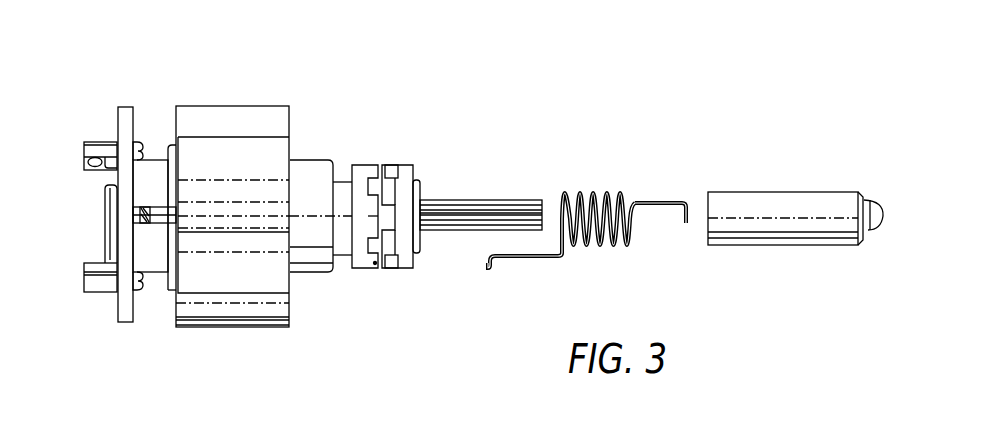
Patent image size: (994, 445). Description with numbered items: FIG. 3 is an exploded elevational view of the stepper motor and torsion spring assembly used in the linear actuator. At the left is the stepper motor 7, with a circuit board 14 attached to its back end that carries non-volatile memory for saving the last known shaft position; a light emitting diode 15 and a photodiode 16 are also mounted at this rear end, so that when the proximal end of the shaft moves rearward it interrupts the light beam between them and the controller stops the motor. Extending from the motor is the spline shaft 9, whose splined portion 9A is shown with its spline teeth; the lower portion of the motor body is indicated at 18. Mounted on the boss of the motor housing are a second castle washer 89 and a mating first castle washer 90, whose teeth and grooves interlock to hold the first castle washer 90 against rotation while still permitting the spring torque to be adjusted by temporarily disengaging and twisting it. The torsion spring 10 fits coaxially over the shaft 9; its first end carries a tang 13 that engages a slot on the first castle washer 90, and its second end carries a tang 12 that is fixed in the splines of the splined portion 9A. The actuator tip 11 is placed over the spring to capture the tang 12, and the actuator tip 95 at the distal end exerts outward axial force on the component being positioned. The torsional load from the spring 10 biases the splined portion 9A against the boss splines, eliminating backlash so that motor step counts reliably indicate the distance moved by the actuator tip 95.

The stepper motor 7 is at (228, 132).
The spline shaft 9 is at (525, 211).
The splined portion 9A is at (482, 202).
The torsion spring 10 is at (592, 195).
The actuator tip 11 is at (785, 192).
The tang 12 is at (684, 223).
The tang 13 is at (491, 262).
The circuit board 14 is at (127, 106).
The light emitting diode 15 is at (98, 292).
The photodiode 16 is at (103, 138).
The housing base 18 is at (177, 305).
The second castle washer 89 is at (362, 169).
The first castle washer 90 is at (403, 169).
The actuator tip 95 is at (875, 213).